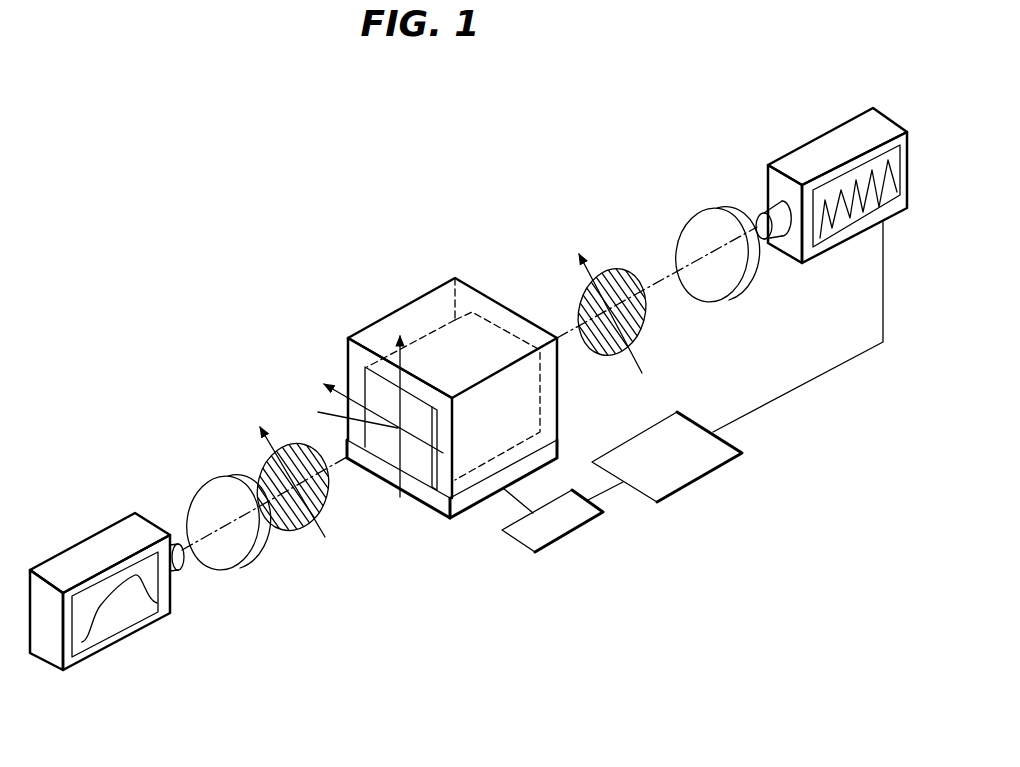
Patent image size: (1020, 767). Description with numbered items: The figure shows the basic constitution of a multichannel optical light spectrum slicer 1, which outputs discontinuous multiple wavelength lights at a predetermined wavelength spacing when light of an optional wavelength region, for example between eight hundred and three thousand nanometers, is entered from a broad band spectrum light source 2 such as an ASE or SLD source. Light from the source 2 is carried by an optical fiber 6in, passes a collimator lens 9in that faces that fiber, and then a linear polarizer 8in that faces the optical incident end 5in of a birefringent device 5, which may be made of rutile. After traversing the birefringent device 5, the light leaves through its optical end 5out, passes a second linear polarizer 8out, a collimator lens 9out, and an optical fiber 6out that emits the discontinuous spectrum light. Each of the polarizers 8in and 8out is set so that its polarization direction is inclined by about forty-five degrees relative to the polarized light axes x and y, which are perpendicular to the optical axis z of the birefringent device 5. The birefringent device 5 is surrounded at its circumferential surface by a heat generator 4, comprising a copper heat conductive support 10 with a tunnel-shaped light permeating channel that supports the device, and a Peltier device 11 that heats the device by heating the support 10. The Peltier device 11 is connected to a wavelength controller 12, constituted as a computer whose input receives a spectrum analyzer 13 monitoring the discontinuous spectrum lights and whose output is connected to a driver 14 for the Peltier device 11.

The multichannel optical light spectrum slicer 1 is at (192, 211).
The broad band spectrum light source 2 is at (143, 630).
The heat generator 4 is at (452, 500).
The birefringent device 5 is at (448, 323).
The optical incident end 5in is at (366, 508).
The optical end 5out is at (493, 357).
The optical fiber 6in is at (187, 547).
The optical fiber 6out is at (747, 233).
The linear polarizer 8in is at (258, 468).
The linear polarizer 8out is at (608, 268).
The collimator lens 9in is at (200, 505).
The collimator lens 9out is at (722, 287).
The heat conductive support 10 is at (477, 474).
The Peltier device 11 is at (438, 502).
The wavelength controller 12 is at (677, 470).
The spectrum analyzer 13 is at (820, 152).
The driver 14 is at (563, 523).